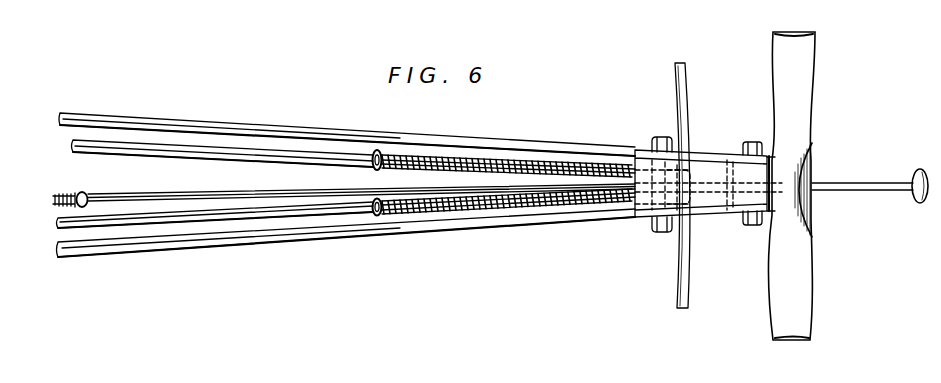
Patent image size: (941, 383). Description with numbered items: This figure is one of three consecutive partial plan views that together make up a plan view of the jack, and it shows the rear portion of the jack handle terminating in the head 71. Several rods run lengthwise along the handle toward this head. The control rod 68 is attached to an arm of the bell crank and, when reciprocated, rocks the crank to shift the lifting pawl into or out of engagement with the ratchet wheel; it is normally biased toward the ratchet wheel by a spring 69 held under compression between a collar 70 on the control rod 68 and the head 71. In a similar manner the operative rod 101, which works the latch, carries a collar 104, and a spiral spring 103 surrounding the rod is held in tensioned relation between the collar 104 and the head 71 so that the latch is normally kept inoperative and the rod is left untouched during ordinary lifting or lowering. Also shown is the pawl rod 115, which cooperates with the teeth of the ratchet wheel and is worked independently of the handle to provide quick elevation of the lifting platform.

The control rod 68 is at (211, 152).
The spring 69 is at (452, 160).
The collar 70 is at (379, 150).
The head of the jack handle 71 is at (712, 198).
The operative rod 101 is at (236, 219).
The spiral spring 103 is at (440, 209).
The collar 104 is at (377, 217).
The pawl rod 115 is at (130, 198).